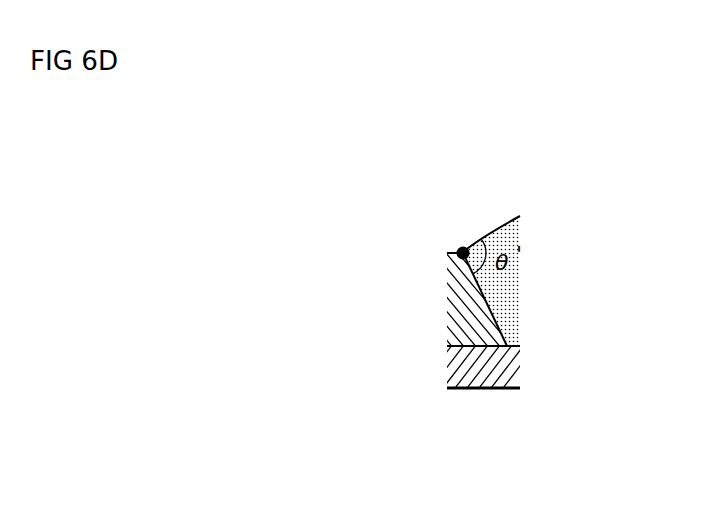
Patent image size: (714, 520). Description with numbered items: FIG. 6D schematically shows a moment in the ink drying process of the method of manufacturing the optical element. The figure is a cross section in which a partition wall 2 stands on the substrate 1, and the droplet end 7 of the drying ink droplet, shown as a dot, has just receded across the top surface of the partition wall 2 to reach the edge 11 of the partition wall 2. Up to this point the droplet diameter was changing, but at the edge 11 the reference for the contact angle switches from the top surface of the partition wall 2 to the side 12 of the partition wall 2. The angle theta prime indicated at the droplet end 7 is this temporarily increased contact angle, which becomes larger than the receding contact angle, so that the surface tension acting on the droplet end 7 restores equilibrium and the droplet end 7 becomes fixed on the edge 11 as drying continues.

The droplet end 7 is at (486, 245).
The edge of the partition wall 11 is at (451, 252).
The partition wall 2 is at (458, 321).
The side of the partition wall 12 is at (488, 294).
The substrate 1 is at (508, 377).